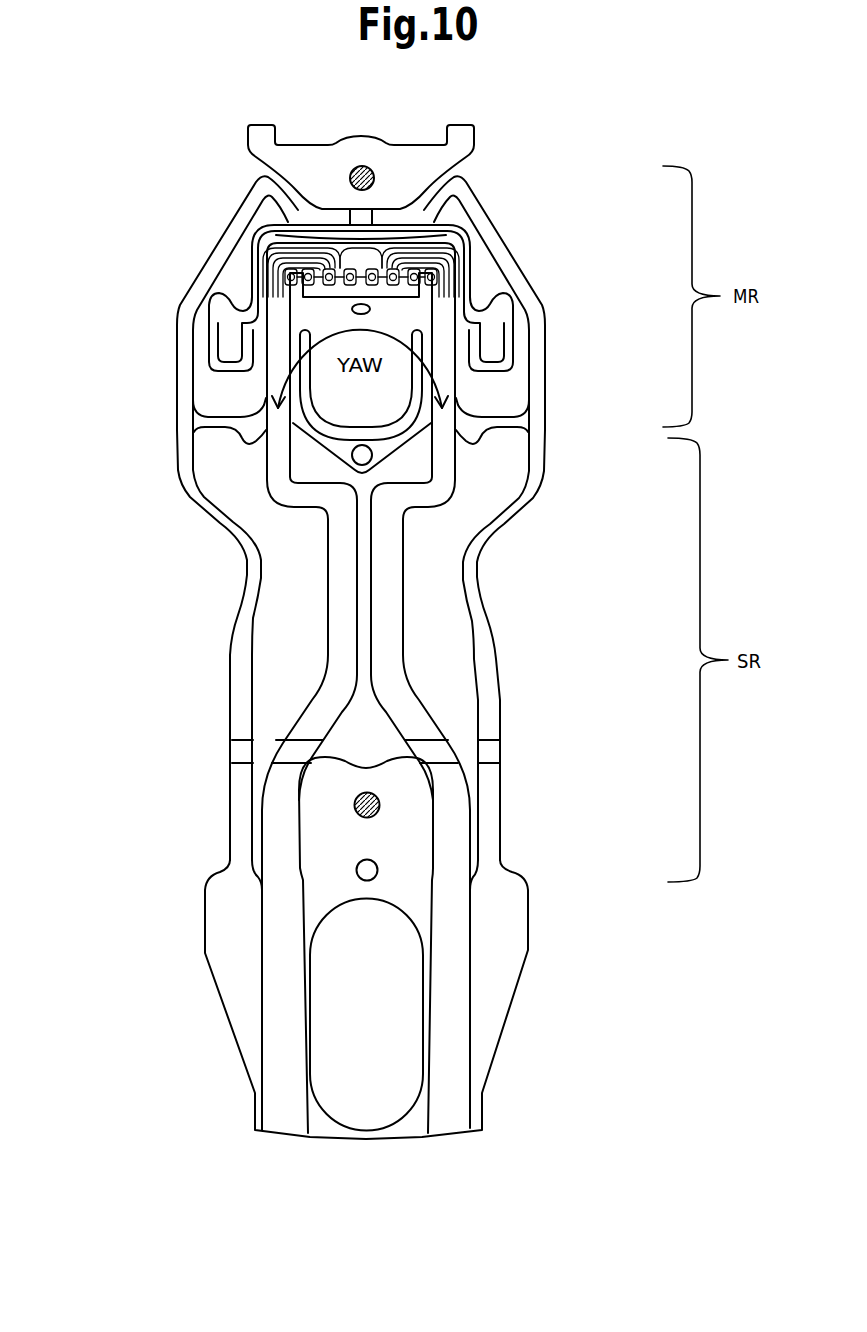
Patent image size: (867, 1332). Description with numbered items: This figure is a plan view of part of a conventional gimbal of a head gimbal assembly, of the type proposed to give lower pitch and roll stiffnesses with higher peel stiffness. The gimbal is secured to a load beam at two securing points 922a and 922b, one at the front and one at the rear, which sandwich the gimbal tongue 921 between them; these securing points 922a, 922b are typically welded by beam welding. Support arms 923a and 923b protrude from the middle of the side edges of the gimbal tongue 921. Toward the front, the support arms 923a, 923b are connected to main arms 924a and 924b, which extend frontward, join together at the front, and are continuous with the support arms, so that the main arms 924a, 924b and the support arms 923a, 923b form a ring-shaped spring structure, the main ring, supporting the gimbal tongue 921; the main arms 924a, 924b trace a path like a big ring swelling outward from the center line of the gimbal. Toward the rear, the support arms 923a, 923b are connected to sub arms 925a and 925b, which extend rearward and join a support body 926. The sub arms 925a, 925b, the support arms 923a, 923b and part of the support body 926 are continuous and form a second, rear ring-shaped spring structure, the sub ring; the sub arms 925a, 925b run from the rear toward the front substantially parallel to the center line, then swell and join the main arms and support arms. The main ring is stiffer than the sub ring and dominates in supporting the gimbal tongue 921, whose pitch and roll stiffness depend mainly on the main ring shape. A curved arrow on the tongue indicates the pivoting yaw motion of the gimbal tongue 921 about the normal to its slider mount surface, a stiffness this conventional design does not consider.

The gimbal tongue 921 is at (312, 305).
The securing point 922a is at (373, 170).
The securing point 922b is at (380, 806).
The support arm 923a is at (467, 425).
The support arm 923b is at (235, 442).
The main arm 924a is at (544, 296).
The main arm 924b is at (176, 322).
The sub arm 925a is at (527, 503).
The sub arm 925b is at (205, 511).
The support body 926 is at (528, 942).